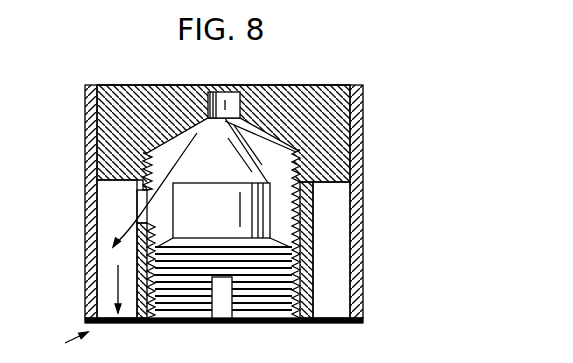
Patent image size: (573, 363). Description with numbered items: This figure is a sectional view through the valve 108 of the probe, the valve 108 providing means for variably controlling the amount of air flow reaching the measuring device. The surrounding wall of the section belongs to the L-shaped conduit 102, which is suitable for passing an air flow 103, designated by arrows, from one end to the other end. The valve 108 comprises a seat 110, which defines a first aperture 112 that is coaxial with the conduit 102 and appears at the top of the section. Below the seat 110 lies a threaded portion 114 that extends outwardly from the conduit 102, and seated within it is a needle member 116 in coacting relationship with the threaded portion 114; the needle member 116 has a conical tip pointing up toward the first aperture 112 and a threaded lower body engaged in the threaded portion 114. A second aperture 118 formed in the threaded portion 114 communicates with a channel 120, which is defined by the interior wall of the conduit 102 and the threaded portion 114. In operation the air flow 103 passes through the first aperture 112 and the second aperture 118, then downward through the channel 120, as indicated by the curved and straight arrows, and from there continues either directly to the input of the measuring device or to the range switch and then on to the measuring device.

The L-shaped conduit 102 is at (365, 142).
The air flow 103 is at (224, 331).
The valve 108 is at (59, 341).
The seat 110 is at (156, 84).
The first aperture 112 is at (227, 85).
The threaded portion 114 is at (131, 258).
The needle member 116 is at (250, 220).
The second aperture 118 is at (135, 202).
The channel 120 is at (107, 280).